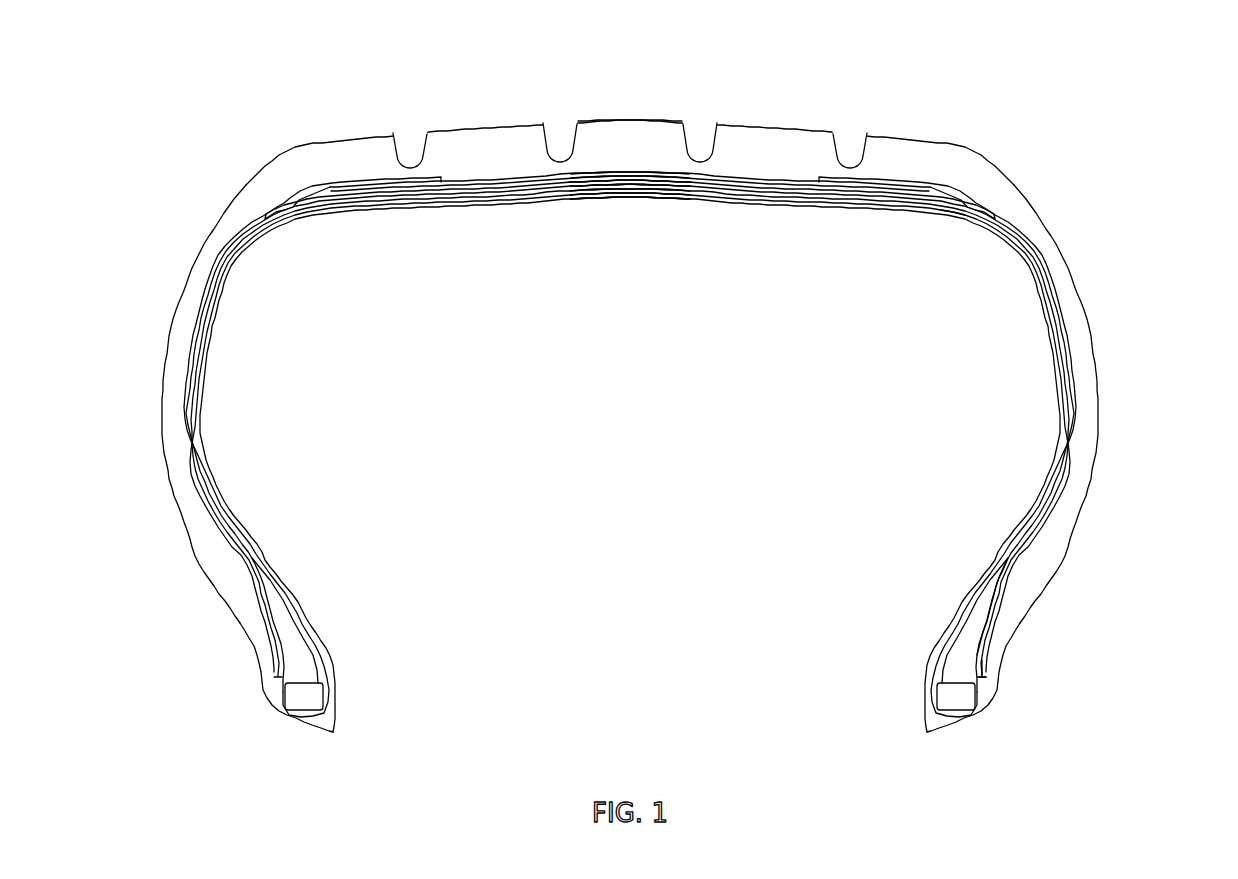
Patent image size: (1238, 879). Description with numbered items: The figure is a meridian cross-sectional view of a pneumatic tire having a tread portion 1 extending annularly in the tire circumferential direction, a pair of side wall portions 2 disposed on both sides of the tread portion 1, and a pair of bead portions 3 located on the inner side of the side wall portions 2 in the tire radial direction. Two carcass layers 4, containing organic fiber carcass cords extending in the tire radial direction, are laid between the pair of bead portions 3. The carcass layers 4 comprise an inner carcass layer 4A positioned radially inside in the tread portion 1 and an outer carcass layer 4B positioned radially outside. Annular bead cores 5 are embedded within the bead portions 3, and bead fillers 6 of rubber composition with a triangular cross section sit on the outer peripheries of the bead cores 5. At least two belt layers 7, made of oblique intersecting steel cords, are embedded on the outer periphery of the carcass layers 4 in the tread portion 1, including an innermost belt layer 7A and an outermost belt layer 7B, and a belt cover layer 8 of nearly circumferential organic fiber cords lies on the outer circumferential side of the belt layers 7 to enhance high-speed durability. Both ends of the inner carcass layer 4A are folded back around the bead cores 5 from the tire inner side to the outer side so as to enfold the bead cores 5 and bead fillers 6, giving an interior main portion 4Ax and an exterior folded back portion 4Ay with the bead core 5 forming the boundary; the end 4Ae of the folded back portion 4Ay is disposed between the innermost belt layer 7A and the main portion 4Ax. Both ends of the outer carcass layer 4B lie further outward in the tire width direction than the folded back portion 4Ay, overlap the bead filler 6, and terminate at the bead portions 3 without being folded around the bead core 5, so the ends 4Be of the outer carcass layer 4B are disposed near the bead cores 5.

The tread portion 1 is at (806, 120).
The side wall portion 2 is at (152, 437).
The bead portion 3 is at (249, 692).
The carcass layer 4 is at (698, 448).
The inner carcass layer 4A is at (1075, 446).
The outer carcass layer 4B is at (1060, 485).
The main portion 4Ax is at (1012, 556).
The folded back portion 4Ay is at (988, 616).
The end of the folded back portion 4Ae is at (935, 208).
The end of the outer carcass layer 4Be is at (984, 678).
The bead core 5 is at (305, 695).
The bead filler 6 is at (302, 662).
The belt layer 7 is at (630, 250).
The innermost belt layer 7A is at (678, 190).
The outermost belt layer 7B is at (727, 185).
The belt cover layer 8 is at (343, 174).